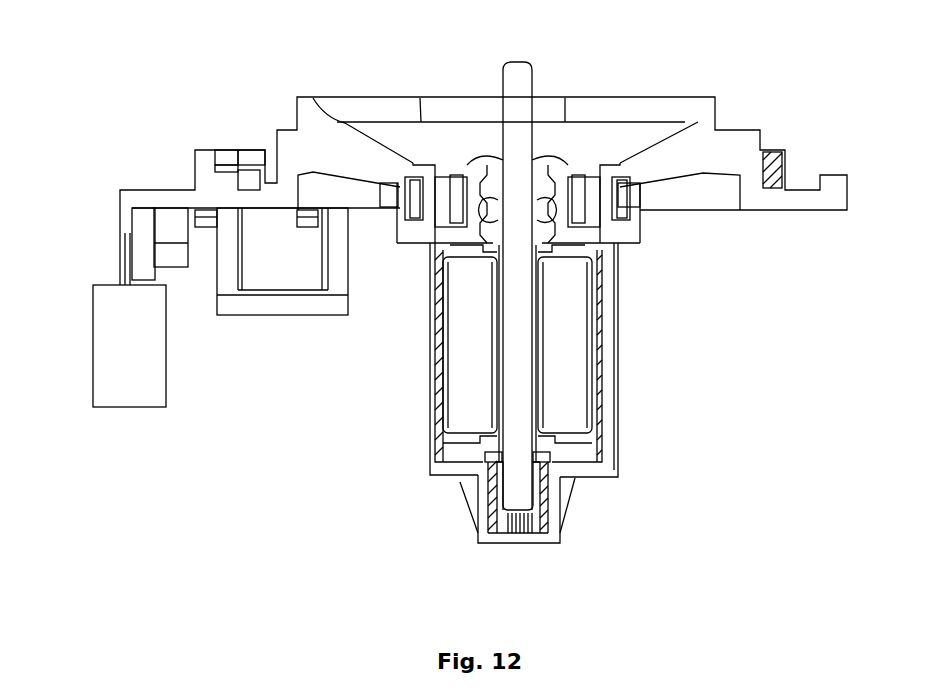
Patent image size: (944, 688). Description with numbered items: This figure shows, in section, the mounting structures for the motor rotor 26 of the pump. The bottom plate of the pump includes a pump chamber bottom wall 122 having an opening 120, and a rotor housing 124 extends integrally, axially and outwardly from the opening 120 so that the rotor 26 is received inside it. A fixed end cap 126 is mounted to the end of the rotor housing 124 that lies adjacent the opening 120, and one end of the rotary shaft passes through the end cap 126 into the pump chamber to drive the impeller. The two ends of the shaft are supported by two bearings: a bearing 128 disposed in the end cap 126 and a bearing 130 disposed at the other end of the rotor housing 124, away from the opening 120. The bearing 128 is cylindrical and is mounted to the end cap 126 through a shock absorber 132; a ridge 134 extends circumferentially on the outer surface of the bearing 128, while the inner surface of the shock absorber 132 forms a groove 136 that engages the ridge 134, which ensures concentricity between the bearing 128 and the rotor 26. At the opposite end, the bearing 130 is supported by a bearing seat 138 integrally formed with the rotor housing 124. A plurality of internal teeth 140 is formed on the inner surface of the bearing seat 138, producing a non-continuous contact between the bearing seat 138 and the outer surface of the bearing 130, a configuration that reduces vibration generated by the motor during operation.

The rotor 26 is at (568, 340).
The opening 120 is at (598, 165).
The pump chamber bottom wall 122 is at (665, 162).
The rotor housing 124 is at (605, 437).
The end cap 126 is at (577, 167).
The bearing 128 is at (538, 160).
The bearing 130 is at (502, 487).
The shock absorber 132 is at (487, 173).
The ridge 134 is at (490, 207).
The groove 136 is at (550, 210).
The bearing seat 138 is at (487, 520).
The internal teeth 140 is at (540, 515).